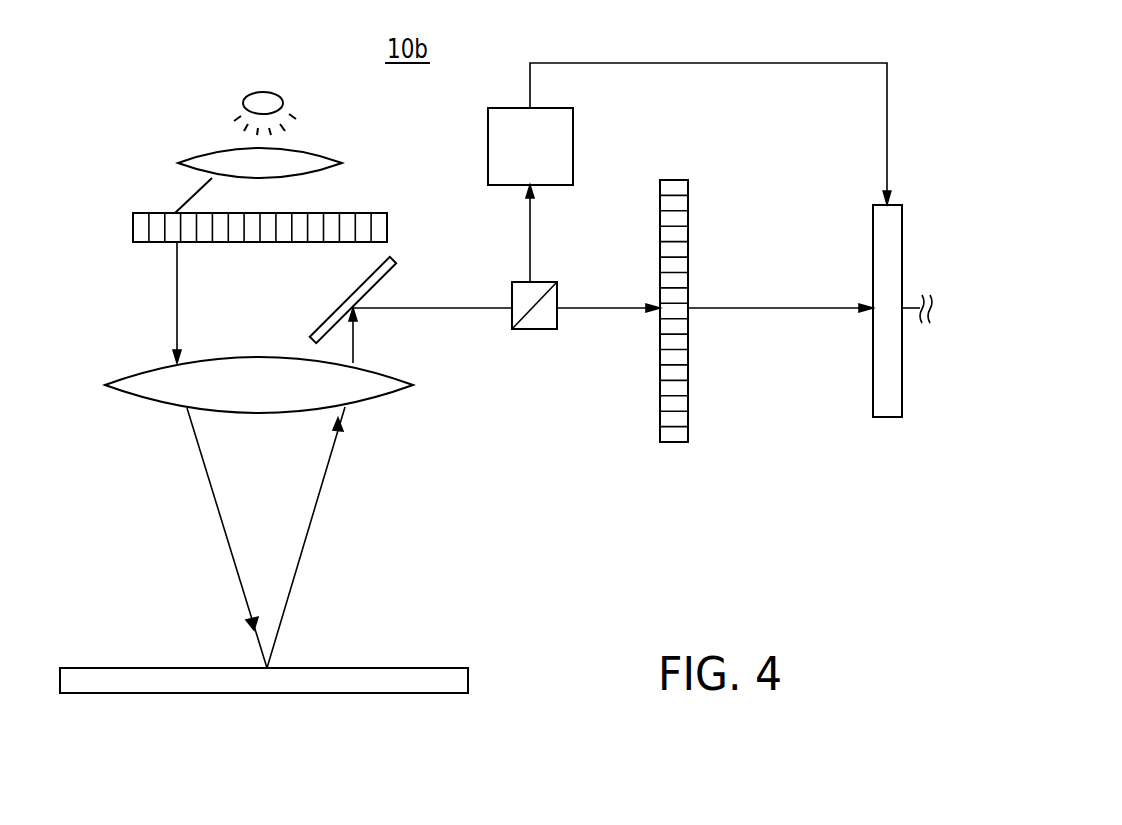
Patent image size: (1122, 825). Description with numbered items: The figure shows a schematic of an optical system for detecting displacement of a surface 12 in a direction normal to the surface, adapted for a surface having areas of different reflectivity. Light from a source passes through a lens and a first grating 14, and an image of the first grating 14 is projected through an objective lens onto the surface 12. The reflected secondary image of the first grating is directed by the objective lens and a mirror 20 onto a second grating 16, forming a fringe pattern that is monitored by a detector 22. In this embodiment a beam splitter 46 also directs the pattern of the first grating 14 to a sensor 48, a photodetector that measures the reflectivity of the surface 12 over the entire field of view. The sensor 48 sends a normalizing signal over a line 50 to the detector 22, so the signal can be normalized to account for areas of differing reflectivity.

The surface 12 is at (372, 668).
The first grating 14 is at (133, 223).
The second grating 16 is at (672, 180).
The mirror 20 is at (395, 262).
The detector 22 is at (885, 417).
The beam splitter 46 is at (530, 329).
The sensor 48 is at (548, 157).
The line 50 is at (710, 63).